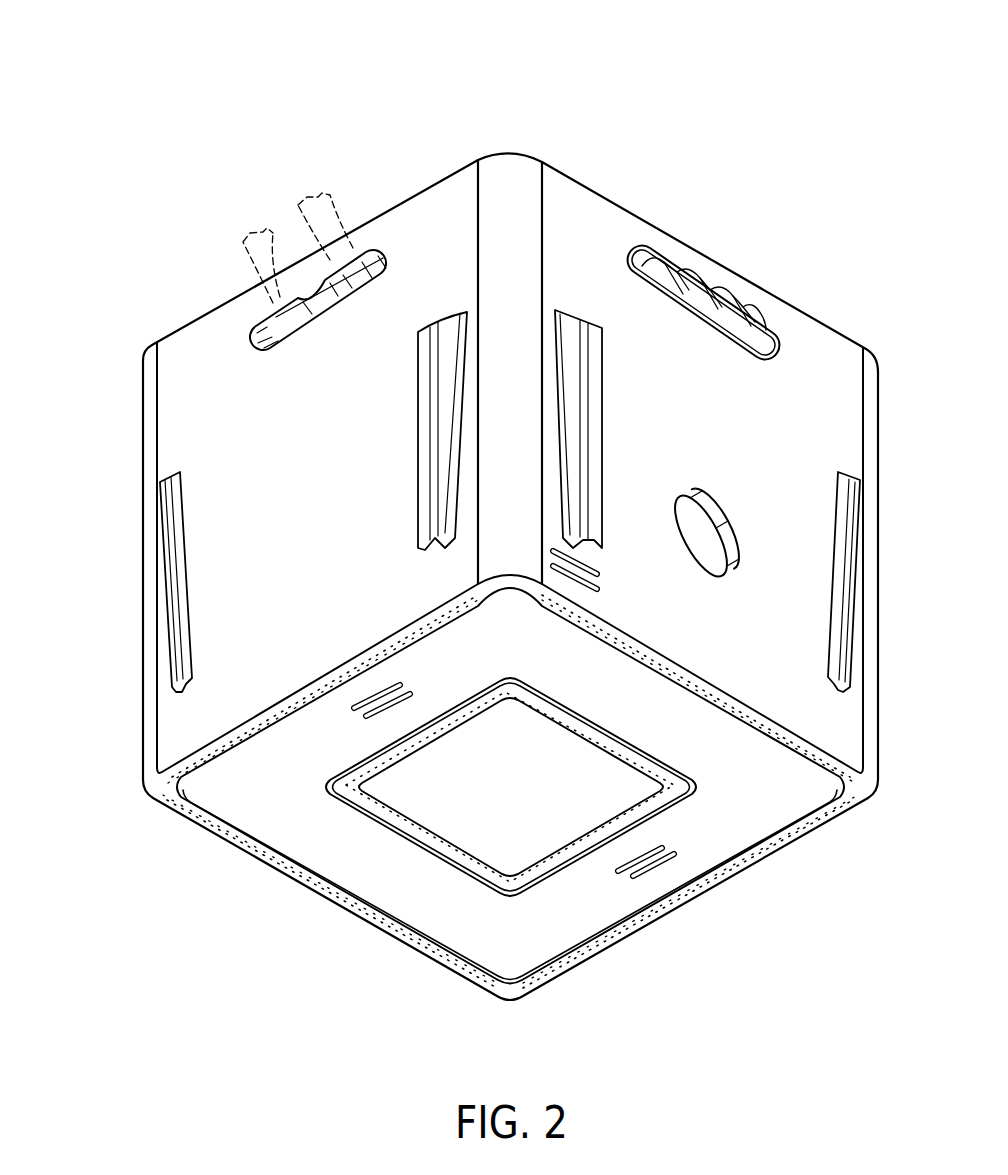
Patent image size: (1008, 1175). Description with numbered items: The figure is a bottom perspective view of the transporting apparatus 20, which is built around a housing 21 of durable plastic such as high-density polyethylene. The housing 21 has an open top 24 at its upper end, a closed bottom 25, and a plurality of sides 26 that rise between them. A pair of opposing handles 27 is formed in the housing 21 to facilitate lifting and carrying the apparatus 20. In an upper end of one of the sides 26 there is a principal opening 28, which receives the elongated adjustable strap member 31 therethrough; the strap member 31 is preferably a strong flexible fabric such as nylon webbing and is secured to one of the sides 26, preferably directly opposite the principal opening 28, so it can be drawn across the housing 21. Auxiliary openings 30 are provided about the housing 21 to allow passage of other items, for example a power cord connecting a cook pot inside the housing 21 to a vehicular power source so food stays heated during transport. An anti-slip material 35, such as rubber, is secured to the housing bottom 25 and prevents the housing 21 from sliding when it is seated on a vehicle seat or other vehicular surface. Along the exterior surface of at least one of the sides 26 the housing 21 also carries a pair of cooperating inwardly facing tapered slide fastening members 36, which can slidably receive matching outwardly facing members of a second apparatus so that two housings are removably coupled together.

The transporting apparatus 20 is at (262, 64).
The housing 21 is at (114, 458).
The open top 24 is at (793, 303).
The closed bottom 25 is at (271, 870).
The sides 26 is at (718, 386).
The handles 27 is at (658, 264).
The principal opening 28 is at (262, 322).
The auxiliary openings 30 is at (726, 537).
The strap member 31 is at (302, 207).
The anti-slip material 35 is at (403, 827).
The inwardly facing tapered slide fastening members 36 is at (597, 484).